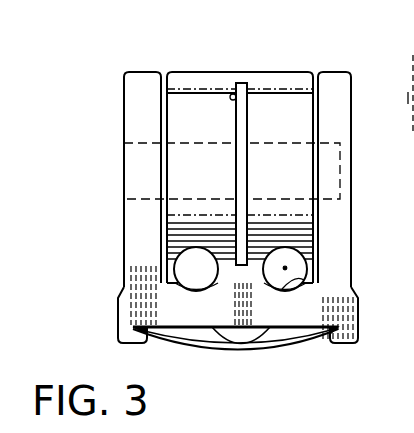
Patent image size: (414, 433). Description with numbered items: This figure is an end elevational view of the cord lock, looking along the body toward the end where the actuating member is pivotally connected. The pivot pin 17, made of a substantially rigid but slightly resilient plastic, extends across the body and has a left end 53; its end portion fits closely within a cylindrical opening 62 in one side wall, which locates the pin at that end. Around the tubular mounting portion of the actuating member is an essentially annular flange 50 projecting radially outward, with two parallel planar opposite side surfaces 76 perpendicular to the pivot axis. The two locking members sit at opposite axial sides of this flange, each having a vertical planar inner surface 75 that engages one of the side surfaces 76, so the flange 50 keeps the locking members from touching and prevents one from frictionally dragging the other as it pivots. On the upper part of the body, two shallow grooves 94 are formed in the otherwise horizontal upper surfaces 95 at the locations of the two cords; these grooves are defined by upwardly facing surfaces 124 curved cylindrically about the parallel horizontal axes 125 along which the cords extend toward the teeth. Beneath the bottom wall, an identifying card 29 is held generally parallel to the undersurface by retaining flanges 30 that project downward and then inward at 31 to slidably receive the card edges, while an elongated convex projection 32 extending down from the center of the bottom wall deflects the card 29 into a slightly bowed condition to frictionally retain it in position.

The pivot pin 17 is at (333, 165).
The identifying card 29 is at (214, 350).
The retaining flanges 30 is at (126, 345).
The inwardly projecting portions of retaining flanges 31 is at (146, 342).
The elongated convex projection 32 is at (252, 337).
The annular flange 50 is at (246, 119).
The left end of pivot pin 53 is at (404, 81).
The cylindrical opening 62 is at (413, 98).
The inner surface of locking member 75 is at (243, 150).
The side surfaces of flange 76 is at (248, 106).
The grooves 94 is at (190, 290).
The upper surfaces 95 is at (215, 263).
The upwardly facing surfaces 124 is at (303, 281).
The axes 125 is at (285, 268).